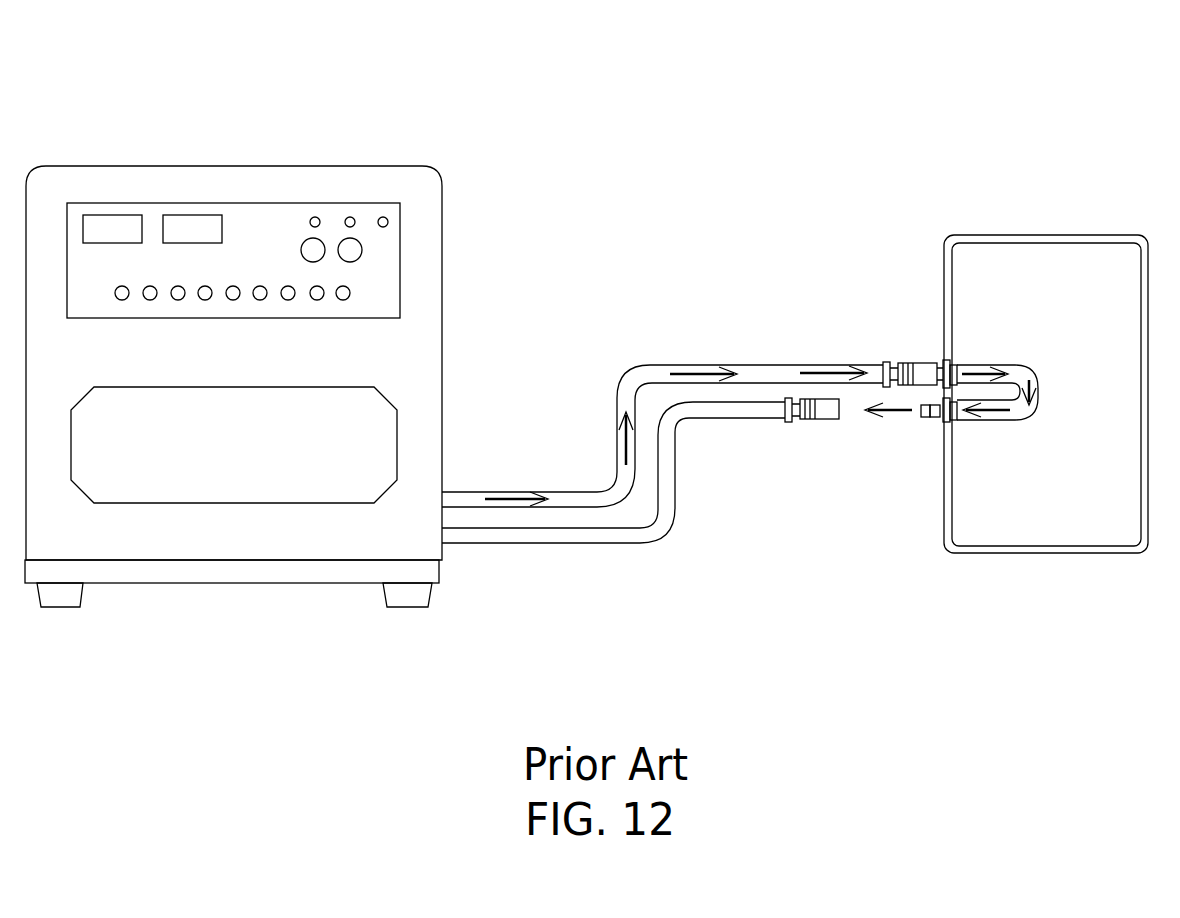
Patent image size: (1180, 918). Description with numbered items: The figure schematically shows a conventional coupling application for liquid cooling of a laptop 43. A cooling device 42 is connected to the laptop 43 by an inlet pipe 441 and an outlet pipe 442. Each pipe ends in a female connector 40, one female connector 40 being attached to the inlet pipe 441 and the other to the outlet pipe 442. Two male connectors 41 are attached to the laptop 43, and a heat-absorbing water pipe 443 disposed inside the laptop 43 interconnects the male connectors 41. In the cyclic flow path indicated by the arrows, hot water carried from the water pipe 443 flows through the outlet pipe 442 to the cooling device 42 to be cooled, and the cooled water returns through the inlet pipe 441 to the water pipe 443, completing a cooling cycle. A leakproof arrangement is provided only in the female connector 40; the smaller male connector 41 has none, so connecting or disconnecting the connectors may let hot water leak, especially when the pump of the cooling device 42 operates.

The female connector 40 is at (920, 362).
The male connector 41 is at (943, 360).
The cooling device 42 is at (272, 177).
The laptop 43 is at (1055, 262).
The inlet pipe 441 is at (768, 363).
The outlet pipe 442 is at (727, 413).
The water pipe 443 is at (1020, 412).